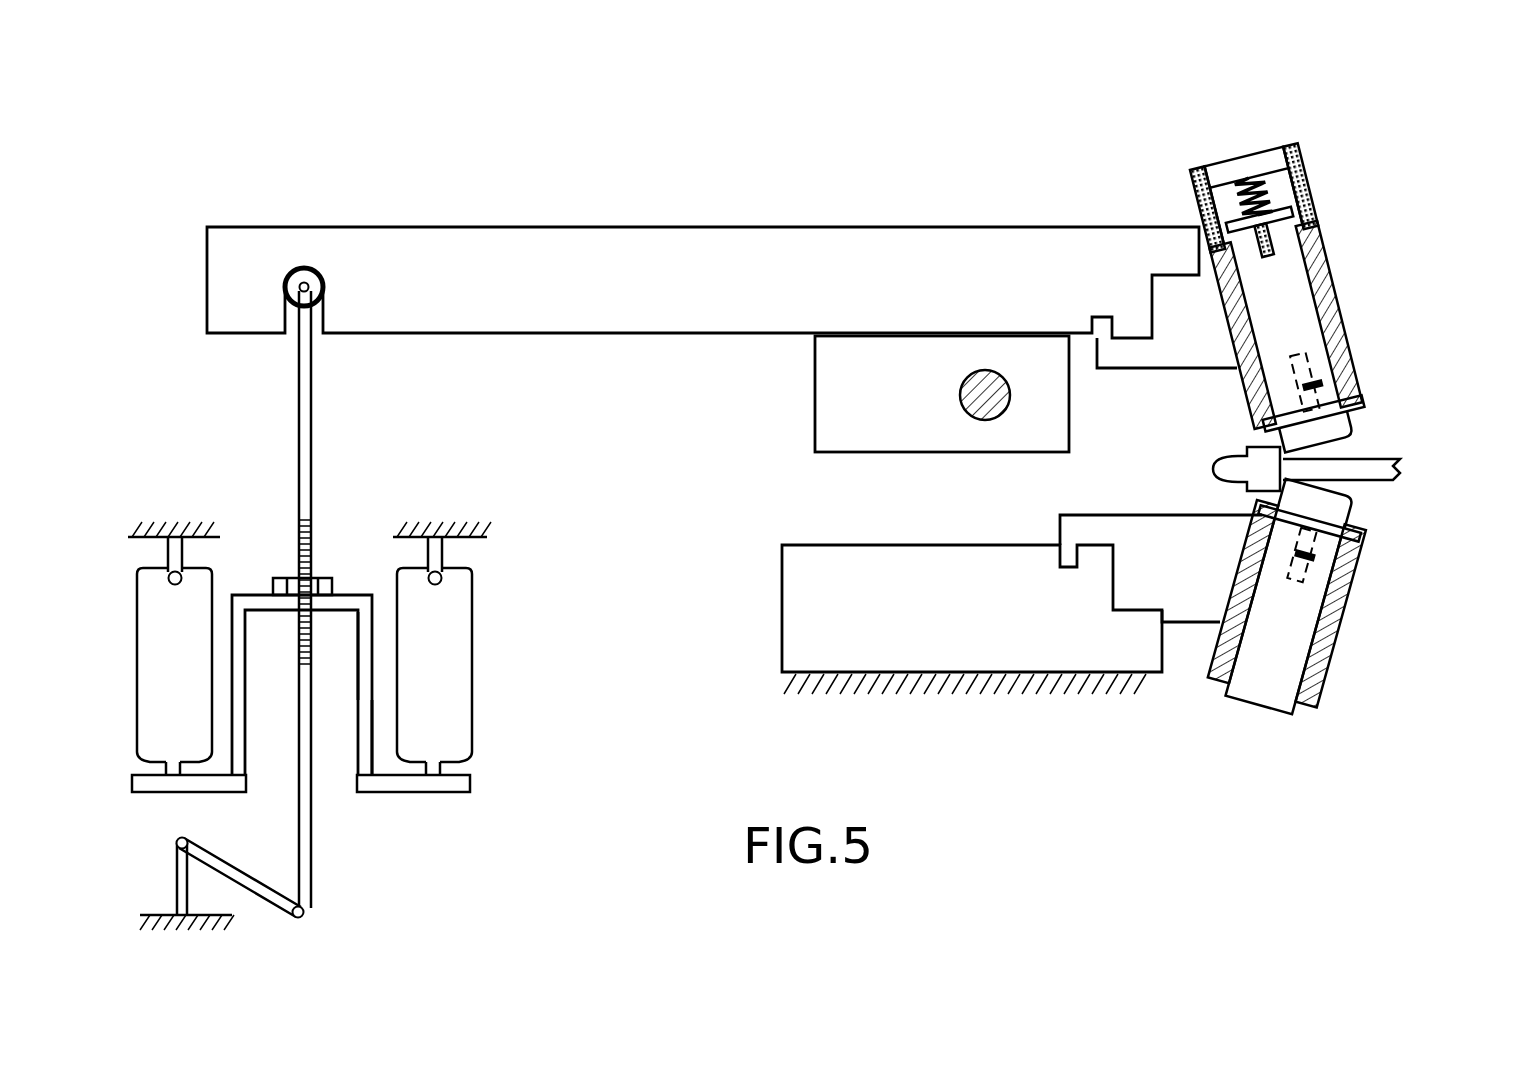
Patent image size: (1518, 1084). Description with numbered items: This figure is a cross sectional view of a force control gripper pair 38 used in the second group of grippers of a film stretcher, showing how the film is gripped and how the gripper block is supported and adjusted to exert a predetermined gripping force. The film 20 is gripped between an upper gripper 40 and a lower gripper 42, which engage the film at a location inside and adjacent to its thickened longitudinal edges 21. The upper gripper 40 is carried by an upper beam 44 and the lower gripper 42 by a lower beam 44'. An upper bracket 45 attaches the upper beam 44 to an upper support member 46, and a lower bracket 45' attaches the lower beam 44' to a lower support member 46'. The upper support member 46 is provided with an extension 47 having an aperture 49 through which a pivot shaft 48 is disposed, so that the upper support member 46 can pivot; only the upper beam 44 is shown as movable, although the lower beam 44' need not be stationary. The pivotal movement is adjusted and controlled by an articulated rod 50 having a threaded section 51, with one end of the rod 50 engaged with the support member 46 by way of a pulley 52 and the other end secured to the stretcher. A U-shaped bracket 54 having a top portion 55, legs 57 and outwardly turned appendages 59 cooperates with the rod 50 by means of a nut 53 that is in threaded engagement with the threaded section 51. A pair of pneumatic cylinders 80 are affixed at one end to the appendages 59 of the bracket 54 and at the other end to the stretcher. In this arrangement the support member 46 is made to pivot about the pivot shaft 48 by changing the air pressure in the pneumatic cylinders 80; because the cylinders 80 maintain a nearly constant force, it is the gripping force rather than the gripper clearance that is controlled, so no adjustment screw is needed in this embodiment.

The force control gripper pair 38 is at (887, 180).
The upper support member 46 is at (703, 282).
The pulley 52 is at (323, 313).
The articulated rod 50 is at (311, 403).
The threaded section 51 is at (312, 545).
The nut 53 is at (288, 578).
The U-shaped bracket 54 is at (362, 580).
The top portion 55 is at (345, 606).
The legs 57 is at (365, 722).
The outwardly turned appendages 59 is at (396, 792).
The pneumatic cylinders 80 is at (191, 669).
The extension 47 is at (890, 402).
The aperture 49 is at (1010, 403).
The pivot shaft 48 is at (963, 405).
The upper bracket 45 is at (1167, 321).
The upper beam 44 is at (1299, 288).
The upper gripper 40 is at (1368, 436).
The lower beam 44' is at (1314, 610).
The lower gripper 42 is at (1375, 513).
The film 20 is at (1395, 473).
The thickened longitudinal edges 21 is at (1232, 457).
The lower support member 46' is at (972, 619).
The lower bracket 45' is at (1161, 568).